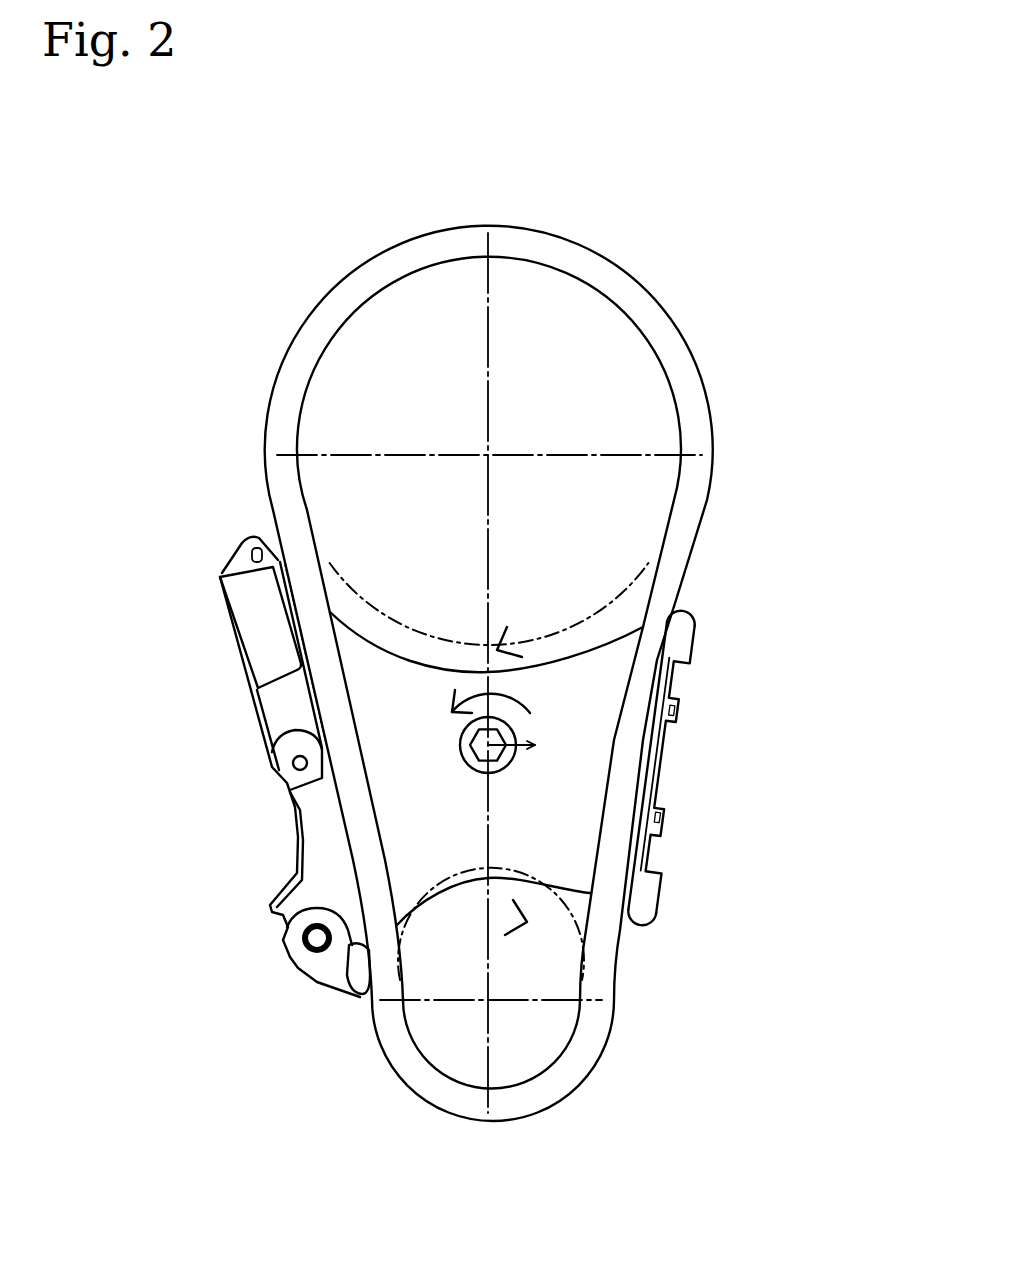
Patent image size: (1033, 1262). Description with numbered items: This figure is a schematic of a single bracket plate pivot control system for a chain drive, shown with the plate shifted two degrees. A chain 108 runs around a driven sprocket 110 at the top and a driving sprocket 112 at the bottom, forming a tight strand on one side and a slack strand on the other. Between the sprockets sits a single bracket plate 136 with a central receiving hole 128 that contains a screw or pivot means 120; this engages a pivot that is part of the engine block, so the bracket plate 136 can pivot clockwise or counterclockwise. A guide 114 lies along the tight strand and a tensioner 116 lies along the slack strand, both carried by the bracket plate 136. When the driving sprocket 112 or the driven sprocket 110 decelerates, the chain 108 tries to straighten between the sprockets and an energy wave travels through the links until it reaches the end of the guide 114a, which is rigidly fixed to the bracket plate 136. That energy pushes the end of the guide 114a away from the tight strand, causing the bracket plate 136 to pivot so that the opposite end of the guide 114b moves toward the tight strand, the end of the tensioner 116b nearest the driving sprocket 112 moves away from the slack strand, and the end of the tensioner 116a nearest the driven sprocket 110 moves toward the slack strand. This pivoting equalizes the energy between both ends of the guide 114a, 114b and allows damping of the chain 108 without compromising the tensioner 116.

The chain 108 is at (677, 363).
The driven sprocket 110 is at (517, 305).
The driving sprocket 112 is at (538, 1027).
The guide 114 is at (665, 777).
The end of the guide 114a is at (678, 650).
The end of the guide 114b is at (643, 883).
The tensioner 116 is at (280, 867).
The end of the tensioner 116a is at (235, 595).
The end of the tensioner 116b is at (340, 985).
The screw or pivot means 120 is at (505, 746).
The central receiving hole 128 is at (462, 763).
The bracket plate 136 is at (382, 728).